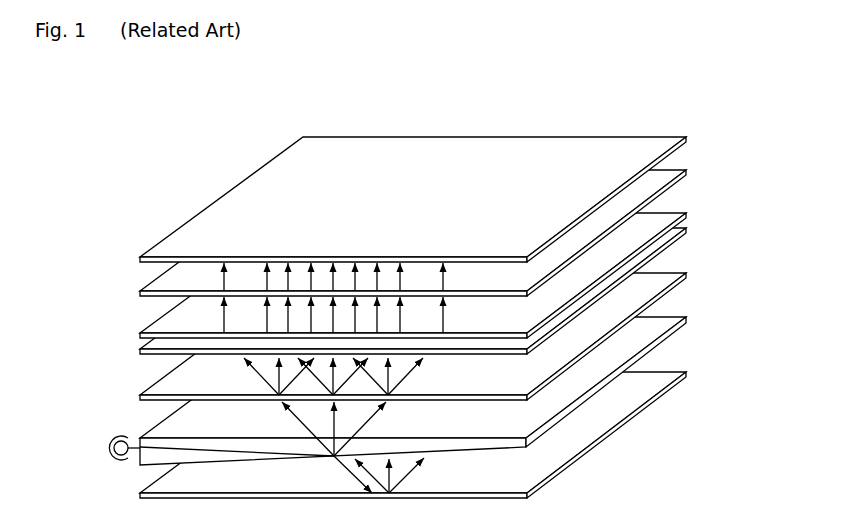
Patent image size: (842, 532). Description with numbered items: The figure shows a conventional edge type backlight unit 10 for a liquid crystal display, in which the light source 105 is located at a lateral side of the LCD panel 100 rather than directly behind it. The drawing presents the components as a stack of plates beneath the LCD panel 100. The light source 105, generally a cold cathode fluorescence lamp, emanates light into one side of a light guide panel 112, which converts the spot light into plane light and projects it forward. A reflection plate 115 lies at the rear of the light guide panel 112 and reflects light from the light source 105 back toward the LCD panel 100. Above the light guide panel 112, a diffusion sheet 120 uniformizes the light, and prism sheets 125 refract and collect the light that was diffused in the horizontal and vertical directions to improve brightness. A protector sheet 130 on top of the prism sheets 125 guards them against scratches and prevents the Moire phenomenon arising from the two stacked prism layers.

The backlight unit 10 is at (734, 103).
The LCD panel 100 is at (484, 152).
The protector sheet 130 is at (687, 170).
The prism sheets 125 is at (688, 229).
The diffusion sheet 120 is at (687, 273).
The light guide plate 112 is at (687, 319).
The reflection plate 115 is at (687, 374).
The light source 105 is at (112, 443).